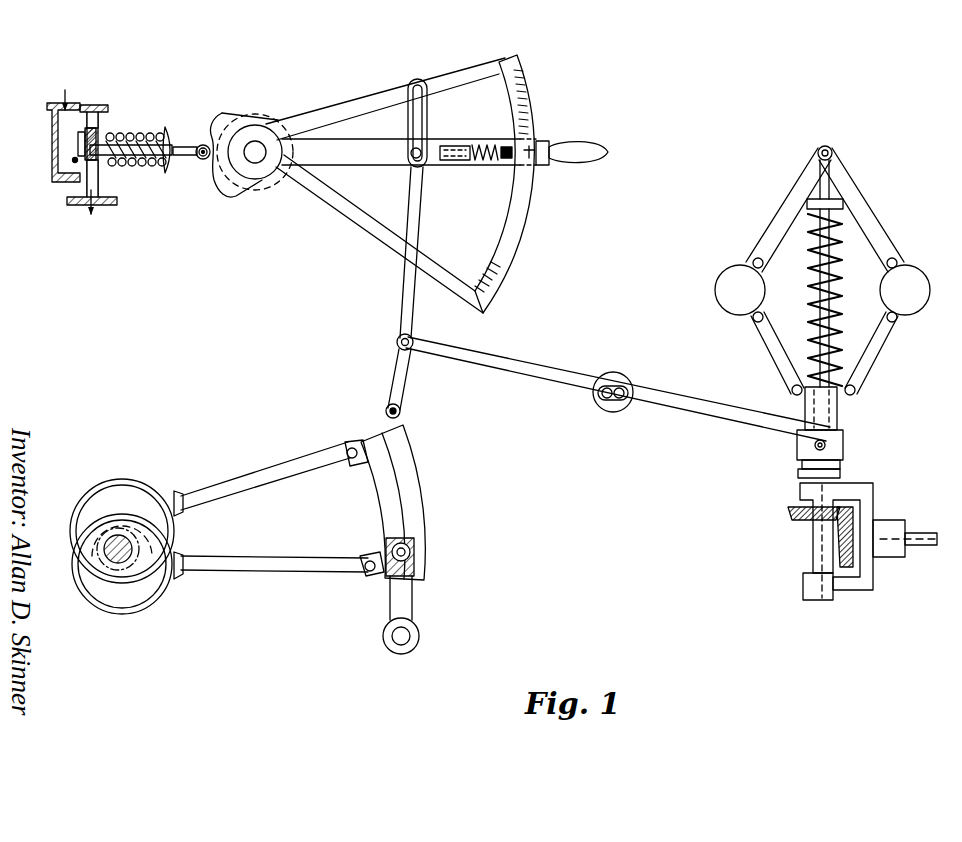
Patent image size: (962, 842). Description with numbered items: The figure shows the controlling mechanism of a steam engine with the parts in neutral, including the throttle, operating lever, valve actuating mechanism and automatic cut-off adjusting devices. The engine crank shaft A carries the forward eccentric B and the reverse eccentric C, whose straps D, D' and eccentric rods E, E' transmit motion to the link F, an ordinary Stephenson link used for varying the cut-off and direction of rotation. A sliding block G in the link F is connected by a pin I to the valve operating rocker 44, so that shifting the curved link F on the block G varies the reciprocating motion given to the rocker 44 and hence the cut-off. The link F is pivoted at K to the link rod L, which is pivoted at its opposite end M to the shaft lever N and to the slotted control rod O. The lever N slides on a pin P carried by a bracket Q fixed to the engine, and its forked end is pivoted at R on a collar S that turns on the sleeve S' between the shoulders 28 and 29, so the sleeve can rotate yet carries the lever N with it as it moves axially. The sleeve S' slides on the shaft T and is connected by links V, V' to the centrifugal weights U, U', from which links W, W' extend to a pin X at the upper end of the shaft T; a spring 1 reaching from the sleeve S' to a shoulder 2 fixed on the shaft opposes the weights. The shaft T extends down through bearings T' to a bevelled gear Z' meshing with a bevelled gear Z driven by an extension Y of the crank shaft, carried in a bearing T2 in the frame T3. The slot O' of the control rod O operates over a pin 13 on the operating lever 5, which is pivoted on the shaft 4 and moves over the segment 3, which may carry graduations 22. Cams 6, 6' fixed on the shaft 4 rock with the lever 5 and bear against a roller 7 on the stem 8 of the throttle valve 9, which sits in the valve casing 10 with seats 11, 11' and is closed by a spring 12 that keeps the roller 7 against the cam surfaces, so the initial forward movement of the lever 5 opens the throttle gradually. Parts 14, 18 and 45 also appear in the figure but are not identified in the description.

The spring 1 is at (842, 251).
The shoulder 2 is at (836, 204).
The segment 3 is at (515, 229).
The shaft 4 is at (256, 147).
The operating lever 5 is at (600, 153).
The cam 6 is at (251, 131).
The cam 6' is at (211, 209).
The roller 7 is at (198, 144).
The stem 8 is at (183, 158).
The throttle valve 9 is at (70, 160).
The valve casing 10 is at (102, 102).
The seat 11 is at (131, 171).
The seat 11' is at (83, 102).
The spring 12 is at (148, 131).
The pin 13 is at (410, 159).
The block 14 is at (540, 166).
The spring 18 is at (499, 124).
The graduations 22 is at (534, 130).
The shoulder 28 is at (843, 464).
The shoulder 29 is at (845, 424).
The valve operating rocker 44 is at (418, 613).
The pin 45 is at (398, 646).
The engine crank shaft A is at (110, 552).
The forward eccentric B is at (122, 565).
The reverse eccentric C is at (122, 531).
The eccentric strap D is at (123, 575).
The eccentric strap D' is at (122, 518).
The eccentric rod E is at (271, 577).
The eccentric rod E' is at (262, 479).
The link F is at (410, 467).
The sliding block G is at (401, 598).
The pin I is at (408, 548).
The pivot K is at (402, 411).
The link rod L is at (398, 372).
The pivot M is at (397, 340).
The shaft lever N is at (512, 368).
The slotted control rod O is at (423, 252).
The slot O' is at (395, 106).
The pin P is at (604, 399).
The bracket Q is at (622, 377).
The pivot R is at (828, 446).
The collar S is at (840, 423).
The sleeve S' is at (788, 414).
The shaft T is at (830, 540).
The bearings T' is at (787, 536).
The bearing T2 is at (880, 555).
The frame T3 is at (852, 583).
The centrifugal weight U is at (921, 288).
The centrifugal weight U' is at (724, 285).
The link V is at (881, 353).
The link V' is at (768, 353).
The link W is at (861, 210).
The link W' is at (785, 210).
The pin X is at (829, 146).
The extension Y is at (925, 538).
The bevelled gear Z is at (873, 529).
The bevelled gear Z' is at (792, 521).